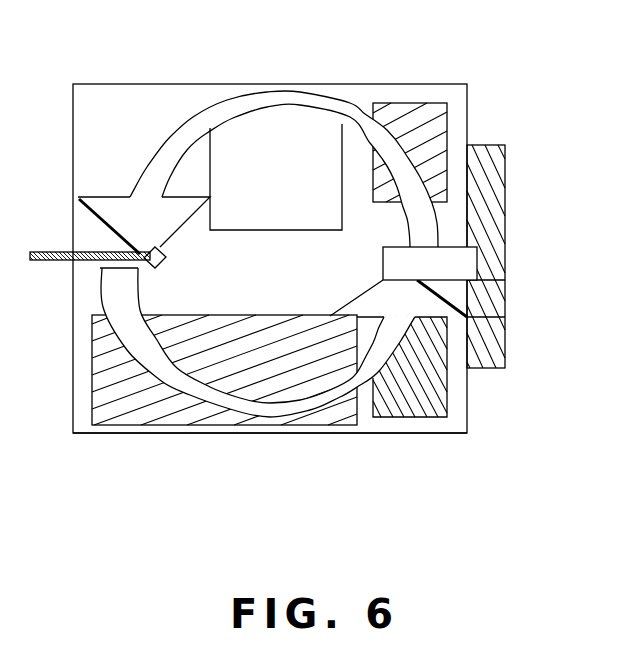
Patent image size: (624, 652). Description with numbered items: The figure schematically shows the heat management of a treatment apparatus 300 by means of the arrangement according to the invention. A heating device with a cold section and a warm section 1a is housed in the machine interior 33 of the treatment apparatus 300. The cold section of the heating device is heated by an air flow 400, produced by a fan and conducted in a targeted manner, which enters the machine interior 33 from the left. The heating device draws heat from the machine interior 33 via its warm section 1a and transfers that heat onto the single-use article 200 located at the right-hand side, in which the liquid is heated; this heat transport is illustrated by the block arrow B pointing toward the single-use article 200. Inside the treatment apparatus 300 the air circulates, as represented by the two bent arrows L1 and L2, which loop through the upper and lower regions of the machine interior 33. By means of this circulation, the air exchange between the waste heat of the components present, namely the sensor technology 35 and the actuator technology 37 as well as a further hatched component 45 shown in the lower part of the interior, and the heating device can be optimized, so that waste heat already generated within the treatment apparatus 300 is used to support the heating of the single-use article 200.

The machine interior 33 is at (112, 128).
The sensor technology 35 is at (447, 118).
The actuator technology 37 is at (447, 378).
The third block 45 is at (113, 385).
The single-use article 200 is at (608, 227).
The treatment apparatus 300 is at (425, 445).
The air flow 400 is at (53, 262).
The warm section 1a is at (503, 302).
The block arrow B is at (475, 235).
The bent arrow L1 is at (233, 108).
The bent arrow L2 is at (190, 392).